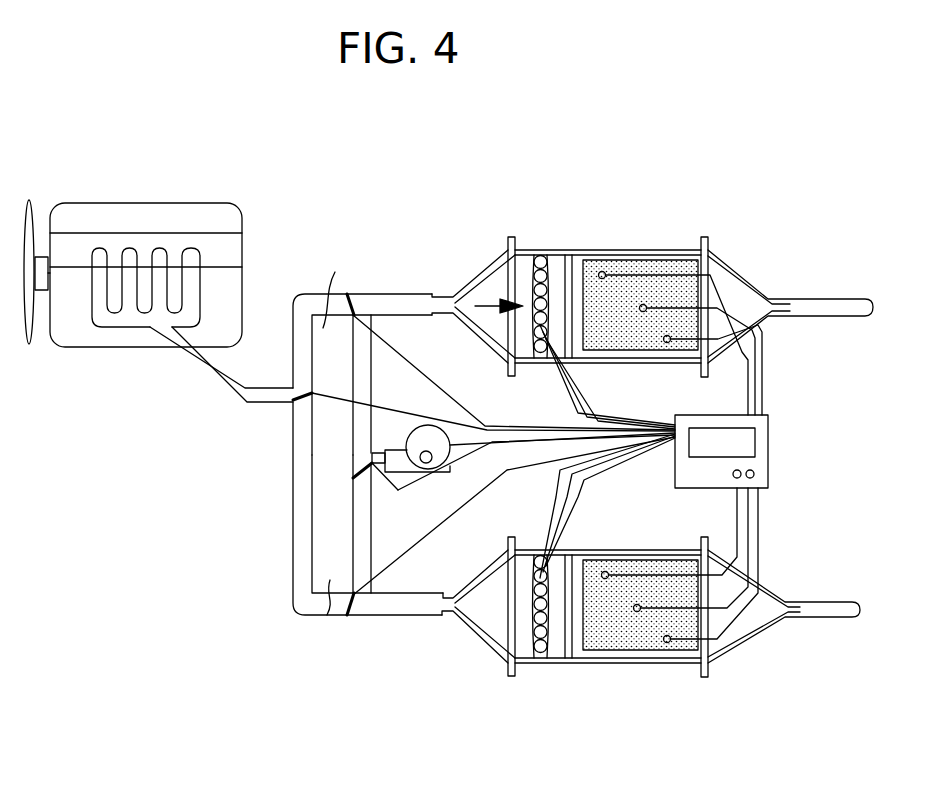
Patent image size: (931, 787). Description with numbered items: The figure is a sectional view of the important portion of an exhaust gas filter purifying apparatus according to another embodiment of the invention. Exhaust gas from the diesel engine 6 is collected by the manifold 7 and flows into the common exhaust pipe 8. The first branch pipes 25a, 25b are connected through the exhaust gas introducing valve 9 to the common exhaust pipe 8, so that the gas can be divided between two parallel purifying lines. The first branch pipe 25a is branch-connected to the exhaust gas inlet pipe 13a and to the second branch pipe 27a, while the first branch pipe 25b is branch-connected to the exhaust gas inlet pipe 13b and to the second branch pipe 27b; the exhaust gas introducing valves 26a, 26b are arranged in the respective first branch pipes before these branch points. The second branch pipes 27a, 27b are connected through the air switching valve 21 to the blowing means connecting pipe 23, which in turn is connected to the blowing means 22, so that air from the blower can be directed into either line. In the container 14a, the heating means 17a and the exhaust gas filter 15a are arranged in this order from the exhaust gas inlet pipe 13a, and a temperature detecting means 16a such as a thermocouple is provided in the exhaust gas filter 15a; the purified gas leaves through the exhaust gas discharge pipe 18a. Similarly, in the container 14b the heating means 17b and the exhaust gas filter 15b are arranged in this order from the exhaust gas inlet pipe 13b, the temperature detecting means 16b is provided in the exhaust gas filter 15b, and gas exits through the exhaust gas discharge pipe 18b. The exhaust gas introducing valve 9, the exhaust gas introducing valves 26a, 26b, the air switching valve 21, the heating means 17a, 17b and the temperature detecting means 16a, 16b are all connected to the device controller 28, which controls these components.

The diesel engine 6 is at (120, 220).
The manifold 7 is at (128, 322).
The common exhaust pipe 8 is at (187, 358).
The exhaust gas introducing valve 9 is at (290, 403).
The exhaust gas inlet pipe 13a is at (478, 274).
The exhaust gas inlet pipe 13b is at (472, 630).
The container 14a is at (657, 250).
The container 14b is at (675, 668).
The exhaust gas filter 15a is at (625, 358).
The exhaust gas filter 15b is at (614, 660).
The temperature detecting means 16a is at (612, 263).
The temperature detecting means 16b is at (605, 565).
The heating means 17a is at (548, 253).
The heating means 17b is at (540, 665).
The exhaust gas discharge pipe 18a is at (740, 272).
The exhaust gas discharge pipe 18b is at (740, 641).
The air switching valve 21 is at (352, 468).
The blowing means 22 is at (448, 428).
The blowing means connecting pipe 23 is at (383, 452).
The first branch pipe 25a is at (313, 297).
The first branch pipe 25b is at (300, 583).
The exhaust gas introducing valve 26a is at (357, 297).
The exhaust gas introducing valve 26b is at (352, 612).
The second branch pipe 27a is at (362, 367).
The second branch pipe 27b is at (363, 530).
The device controller 28 is at (768, 455).